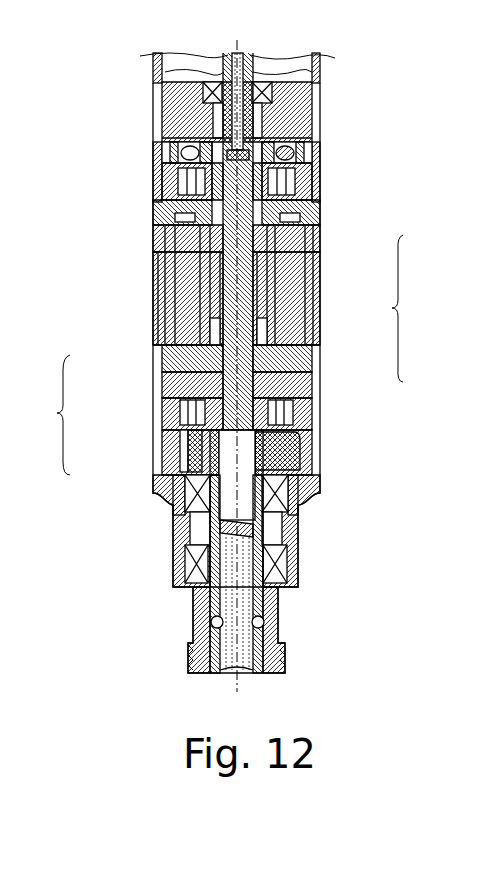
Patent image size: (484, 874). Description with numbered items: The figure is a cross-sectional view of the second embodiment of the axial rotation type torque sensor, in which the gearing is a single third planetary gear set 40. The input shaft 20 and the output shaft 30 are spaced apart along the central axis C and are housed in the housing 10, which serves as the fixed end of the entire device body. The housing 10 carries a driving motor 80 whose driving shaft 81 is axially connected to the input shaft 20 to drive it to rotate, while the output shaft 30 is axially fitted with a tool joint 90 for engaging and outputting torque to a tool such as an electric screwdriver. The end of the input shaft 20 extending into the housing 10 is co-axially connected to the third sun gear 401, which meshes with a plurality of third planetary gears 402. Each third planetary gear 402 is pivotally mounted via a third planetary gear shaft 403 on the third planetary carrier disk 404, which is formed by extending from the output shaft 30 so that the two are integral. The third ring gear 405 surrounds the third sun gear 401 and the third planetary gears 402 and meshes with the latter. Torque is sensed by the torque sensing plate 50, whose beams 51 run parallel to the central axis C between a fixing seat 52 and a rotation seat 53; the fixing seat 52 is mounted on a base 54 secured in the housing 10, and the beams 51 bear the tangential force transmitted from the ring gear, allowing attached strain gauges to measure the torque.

The housing 10 is at (316, 458).
The input shaft 20 is at (318, 186).
The output shaft 30 is at (298, 570).
The third planetary gear set 40 is at (168, 435).
The third sun gear 401 is at (160, 362).
The third planetary gears 402 is at (160, 409).
The third planetary gear shaft 403 is at (160, 437).
The third planetary carrier disk 404 is at (160, 459).
The third ring gear 405 is at (160, 387).
The torque sensing plate 50 is at (297, 303).
The beams 51 is at (316, 290).
The fixing seat 52 is at (316, 240).
The rotation seat 53 is at (316, 362).
The base 54 is at (160, 215).
The driving motor 80 is at (316, 68).
The driving shaft 81 is at (157, 76).
The tool joint 90 is at (265, 622).
The central axis C is at (237, 685).